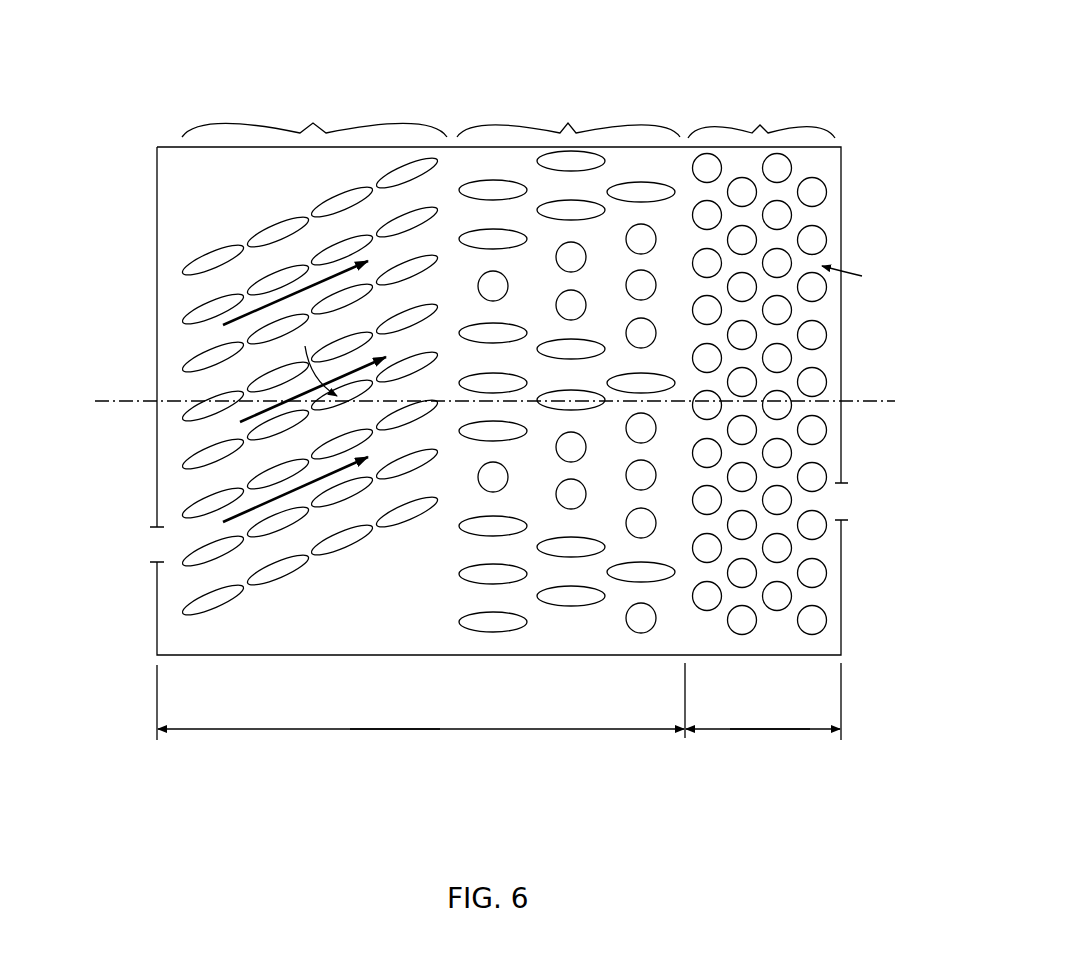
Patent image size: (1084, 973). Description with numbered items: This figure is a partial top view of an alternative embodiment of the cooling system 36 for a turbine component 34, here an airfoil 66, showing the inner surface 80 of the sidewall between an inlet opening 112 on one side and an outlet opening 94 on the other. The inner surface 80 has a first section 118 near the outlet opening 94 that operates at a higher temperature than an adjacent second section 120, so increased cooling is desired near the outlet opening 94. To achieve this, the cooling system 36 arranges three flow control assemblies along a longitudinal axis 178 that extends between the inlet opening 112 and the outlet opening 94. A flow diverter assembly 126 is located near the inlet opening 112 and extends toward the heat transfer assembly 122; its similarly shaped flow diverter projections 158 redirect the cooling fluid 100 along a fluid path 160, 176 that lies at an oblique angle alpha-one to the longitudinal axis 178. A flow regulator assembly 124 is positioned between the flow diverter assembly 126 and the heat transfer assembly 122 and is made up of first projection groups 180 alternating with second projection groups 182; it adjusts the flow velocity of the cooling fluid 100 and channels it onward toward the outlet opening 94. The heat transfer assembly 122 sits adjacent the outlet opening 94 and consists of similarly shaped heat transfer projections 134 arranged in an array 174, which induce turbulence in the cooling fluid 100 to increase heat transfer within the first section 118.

The component 34 is at (600, 58).
The cooling system 36 is at (686, 114).
The airfoil 66 is at (856, 76).
The inner surface 80 is at (822, 164).
The outlet opening 94 is at (855, 506).
The cooling fluid 100 is at (235, 421).
The inlet opening 112 is at (143, 548).
The first section 118 is at (733, 731).
The second section 120 is at (447, 732).
The heat transfer assembly 122 is at (795, 365).
The flow regulator assembly 124 is at (588, 364).
The flow diverter assembly 126 is at (279, 358).
The heat transfer projection 134 is at (827, 236).
The flow diverter projection 158 is at (228, 244).
The fluid path 160 is at (217, 326).
The array 174 is at (862, 276).
The fluid path 176 is at (399, 350).
The longitudinal axis 178 is at (885, 400).
The first projection group 180 is at (656, 258).
The second projection group 182 is at (656, 352).